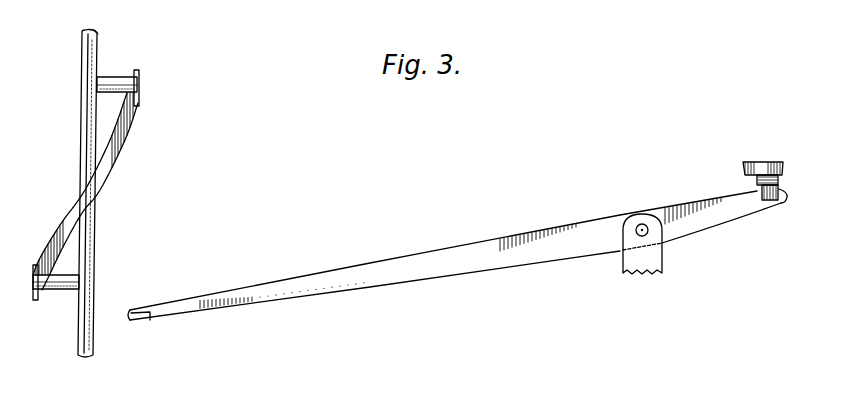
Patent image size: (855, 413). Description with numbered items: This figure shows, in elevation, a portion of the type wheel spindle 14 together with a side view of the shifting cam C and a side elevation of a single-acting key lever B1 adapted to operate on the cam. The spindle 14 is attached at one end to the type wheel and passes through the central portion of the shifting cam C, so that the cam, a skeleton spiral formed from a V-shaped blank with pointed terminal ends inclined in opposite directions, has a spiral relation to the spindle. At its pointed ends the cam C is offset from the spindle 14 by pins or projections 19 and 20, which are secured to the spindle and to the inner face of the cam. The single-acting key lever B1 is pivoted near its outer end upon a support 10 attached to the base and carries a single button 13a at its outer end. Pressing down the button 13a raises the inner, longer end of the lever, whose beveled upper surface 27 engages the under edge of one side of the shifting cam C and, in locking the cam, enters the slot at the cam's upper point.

The spindle 14 is at (81, 135).
The pin or projection 19 is at (128, 64).
The pin or projection 20 is at (60, 292).
The shifting cam C is at (103, 177).
The single-acting key lever B1 is at (484, 243).
The beveled upper surface 27 is at (143, 314).
The support 10 is at (657, 259).
The button 13a is at (764, 168).